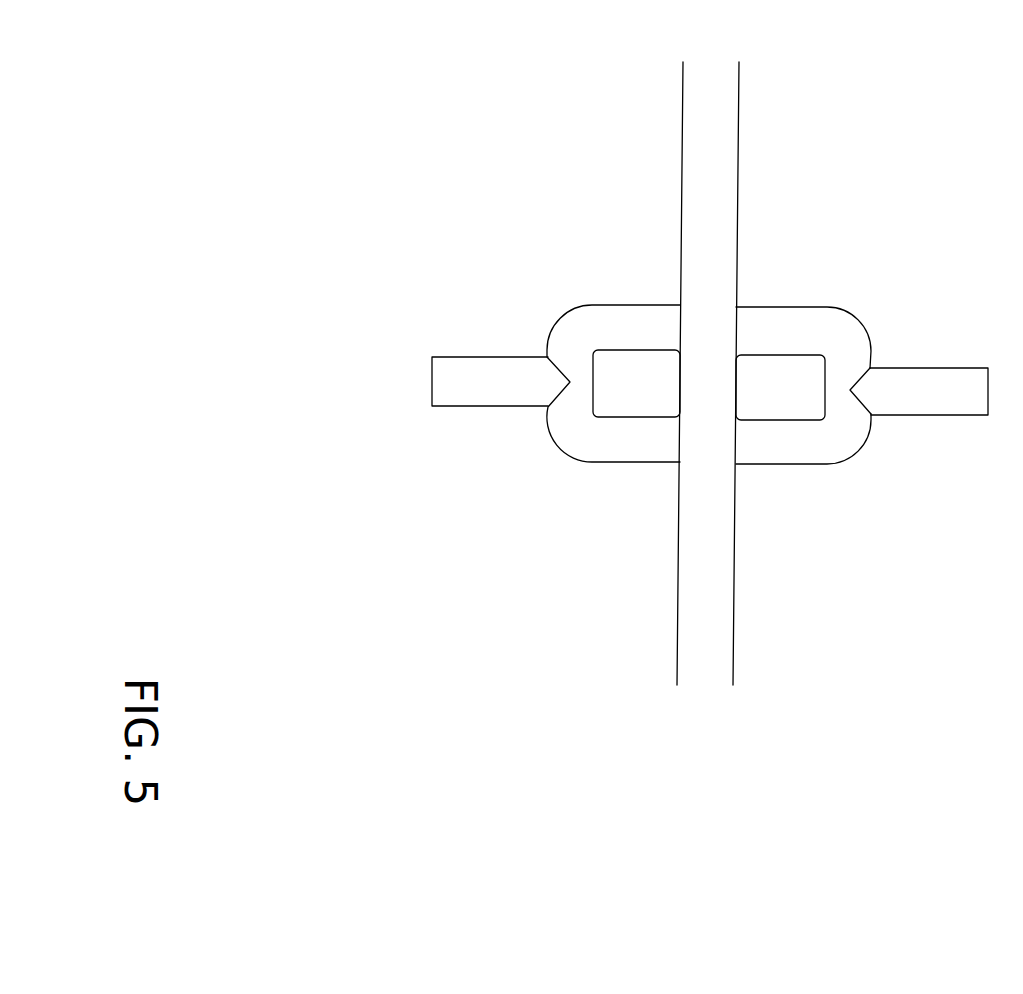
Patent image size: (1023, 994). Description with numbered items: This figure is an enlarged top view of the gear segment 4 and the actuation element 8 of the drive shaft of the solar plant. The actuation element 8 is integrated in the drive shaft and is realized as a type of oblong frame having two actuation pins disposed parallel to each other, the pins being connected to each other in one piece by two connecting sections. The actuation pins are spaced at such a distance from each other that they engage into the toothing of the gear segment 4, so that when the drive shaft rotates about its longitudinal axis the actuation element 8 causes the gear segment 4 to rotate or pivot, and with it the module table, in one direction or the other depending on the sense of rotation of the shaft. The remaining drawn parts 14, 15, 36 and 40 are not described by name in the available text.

The gear segment 4 is at (747, 147).
The actuation element 8 is at (612, 463).
The latch notch 14 is at (855, 420).
The second arm 15 is at (955, 398).
The cavity 36 is at (648, 322).
The first arm 40 is at (573, 362).